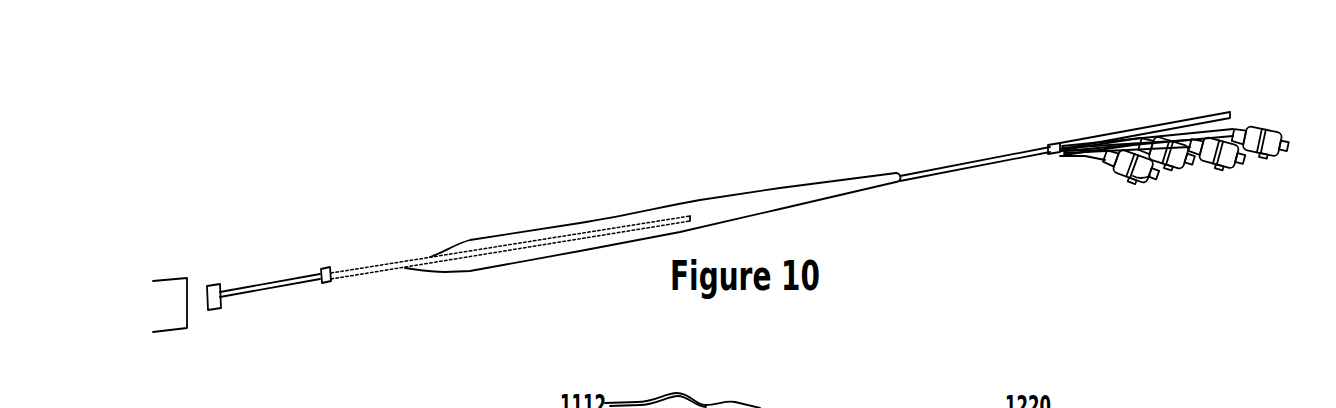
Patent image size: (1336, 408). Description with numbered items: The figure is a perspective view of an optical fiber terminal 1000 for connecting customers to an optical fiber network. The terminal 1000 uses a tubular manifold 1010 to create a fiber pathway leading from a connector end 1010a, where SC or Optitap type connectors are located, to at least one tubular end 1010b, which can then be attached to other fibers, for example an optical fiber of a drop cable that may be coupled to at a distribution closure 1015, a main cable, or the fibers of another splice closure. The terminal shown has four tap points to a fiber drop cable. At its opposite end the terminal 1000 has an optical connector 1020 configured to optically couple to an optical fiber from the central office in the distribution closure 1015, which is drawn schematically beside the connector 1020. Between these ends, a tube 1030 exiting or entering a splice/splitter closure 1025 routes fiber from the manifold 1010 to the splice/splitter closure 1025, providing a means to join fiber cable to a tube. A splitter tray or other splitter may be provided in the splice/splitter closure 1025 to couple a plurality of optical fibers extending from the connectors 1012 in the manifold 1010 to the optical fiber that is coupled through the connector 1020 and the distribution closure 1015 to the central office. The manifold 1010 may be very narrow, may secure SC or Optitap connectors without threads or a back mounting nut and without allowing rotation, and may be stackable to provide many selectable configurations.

The optical fiber terminal 1000 is at (608, 186).
The distribution closure 1015 is at (175, 278).
The optical connector 1020 is at (222, 304).
The splice/splitter closure 1025 is at (552, 258).
The tubular end 1010b is at (925, 191).
The tube 1030 is at (977, 160).
The tubular manifold 1010 is at (1143, 119).
The connector end 1010a is at (1276, 132).
The connectors 1012 is at (1268, 158).